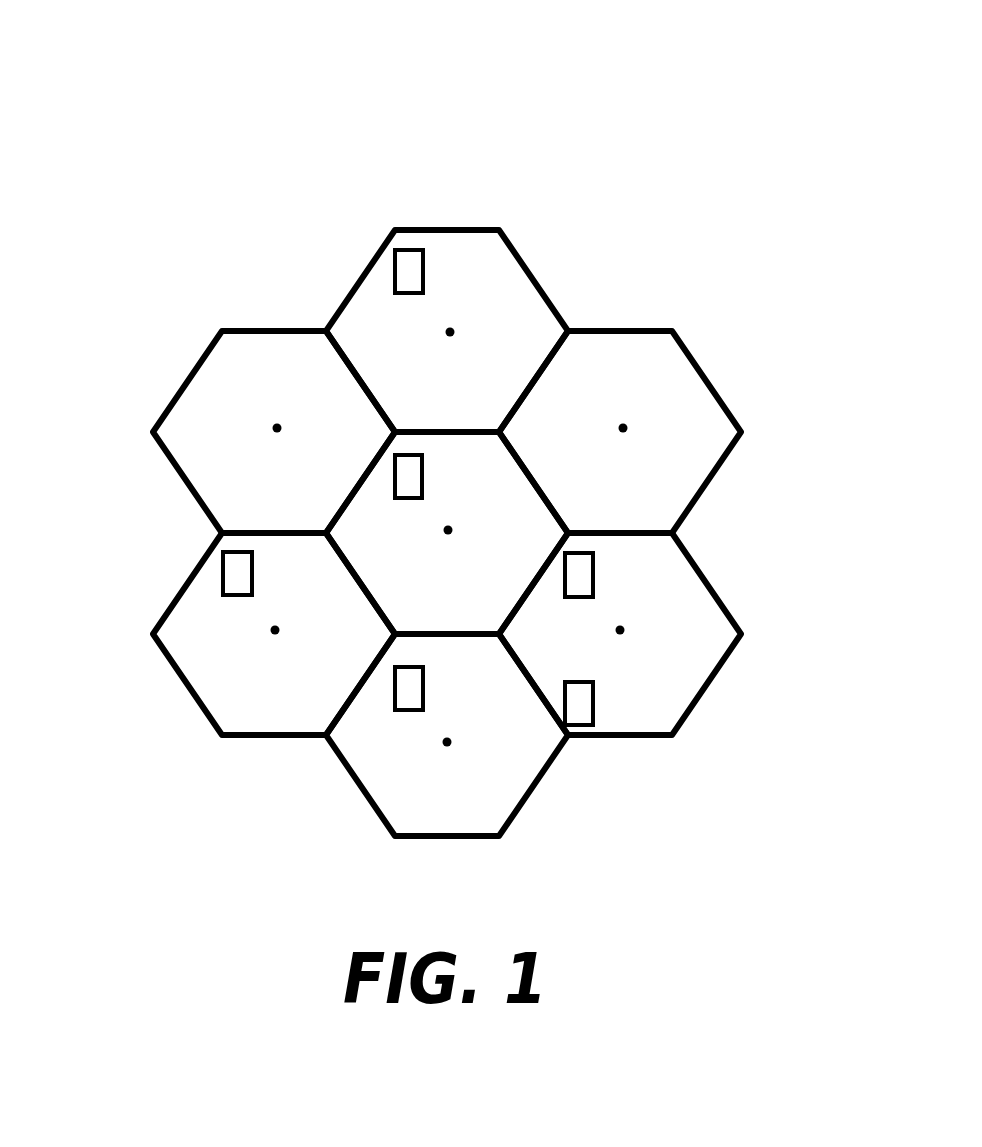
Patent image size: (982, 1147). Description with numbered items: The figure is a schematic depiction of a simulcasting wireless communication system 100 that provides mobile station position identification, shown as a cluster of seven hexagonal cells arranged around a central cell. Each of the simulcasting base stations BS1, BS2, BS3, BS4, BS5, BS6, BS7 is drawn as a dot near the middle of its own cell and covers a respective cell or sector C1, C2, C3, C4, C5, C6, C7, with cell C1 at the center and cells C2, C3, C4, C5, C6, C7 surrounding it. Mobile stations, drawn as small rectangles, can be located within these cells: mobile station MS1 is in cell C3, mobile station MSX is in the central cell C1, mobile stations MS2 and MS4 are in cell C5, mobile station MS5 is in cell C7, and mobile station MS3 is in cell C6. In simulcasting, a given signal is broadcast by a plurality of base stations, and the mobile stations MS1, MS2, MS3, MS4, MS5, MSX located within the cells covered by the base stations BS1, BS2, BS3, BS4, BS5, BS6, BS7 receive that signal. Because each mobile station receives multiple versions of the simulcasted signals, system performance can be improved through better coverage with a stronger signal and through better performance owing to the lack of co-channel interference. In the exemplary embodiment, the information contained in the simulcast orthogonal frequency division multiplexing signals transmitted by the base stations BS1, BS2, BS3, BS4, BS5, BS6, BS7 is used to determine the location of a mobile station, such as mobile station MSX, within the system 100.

The simulcasting wireless communication system 100 is at (556, 106).
The cell C1 is at (545, 553).
The cell C2 is at (168, 402).
The cell C3 is at (515, 243).
The cell C4 is at (733, 410).
The cell C5 is at (725, 662).
The cell C6 is at (520, 815).
The cell C7 is at (170, 660).
The simulcasting base station BS1 is at (447, 554).
The simulcasting base station BS2 is at (273, 454).
The simulcasting base station BS3 is at (448, 356).
The simulcasting base station BS4 is at (620, 454).
The simulcasting base station BS5 is at (620, 654).
The simulcasting base station BS6 is at (446, 766).
The simulcasting base station BS7 is at (275, 655).
The mobile station MS1 is at (444, 272).
The mobile station MS2 is at (616, 576).
The mobile station MS3 is at (446, 690).
The mobile station MS4 is at (615, 704).
The mobile station MS5 is at (274, 575).
The mobile station MSX is at (446, 477).